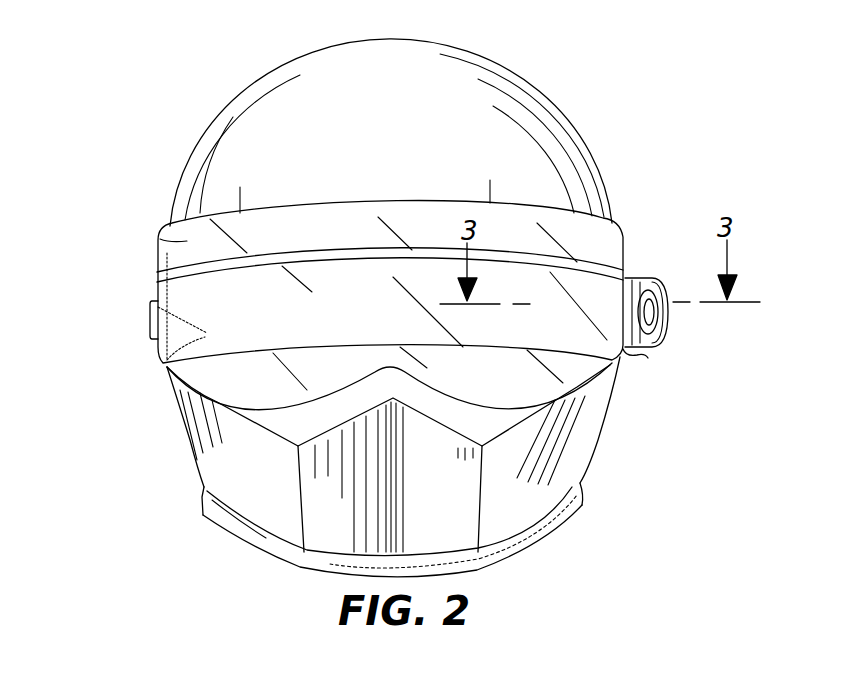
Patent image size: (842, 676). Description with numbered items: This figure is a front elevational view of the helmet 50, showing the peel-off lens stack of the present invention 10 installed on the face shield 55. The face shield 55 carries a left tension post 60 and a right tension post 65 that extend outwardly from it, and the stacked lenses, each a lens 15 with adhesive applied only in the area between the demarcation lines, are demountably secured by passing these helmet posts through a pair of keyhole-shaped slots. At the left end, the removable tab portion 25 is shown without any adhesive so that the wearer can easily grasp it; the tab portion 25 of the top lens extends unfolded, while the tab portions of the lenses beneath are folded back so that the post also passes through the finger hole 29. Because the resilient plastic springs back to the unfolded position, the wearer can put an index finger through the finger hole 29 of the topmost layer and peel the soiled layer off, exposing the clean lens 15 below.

The present invention 10 is at (605, 405).
The lens 15 is at (168, 368).
The removable tab portion 25 is at (645, 354).
The finger hole 29 is at (668, 322).
The helmet 50 is at (203, 80).
The face shield 55 is at (158, 240).
The left tension post 60 is at (633, 277).
The right tension post 65 is at (153, 343).